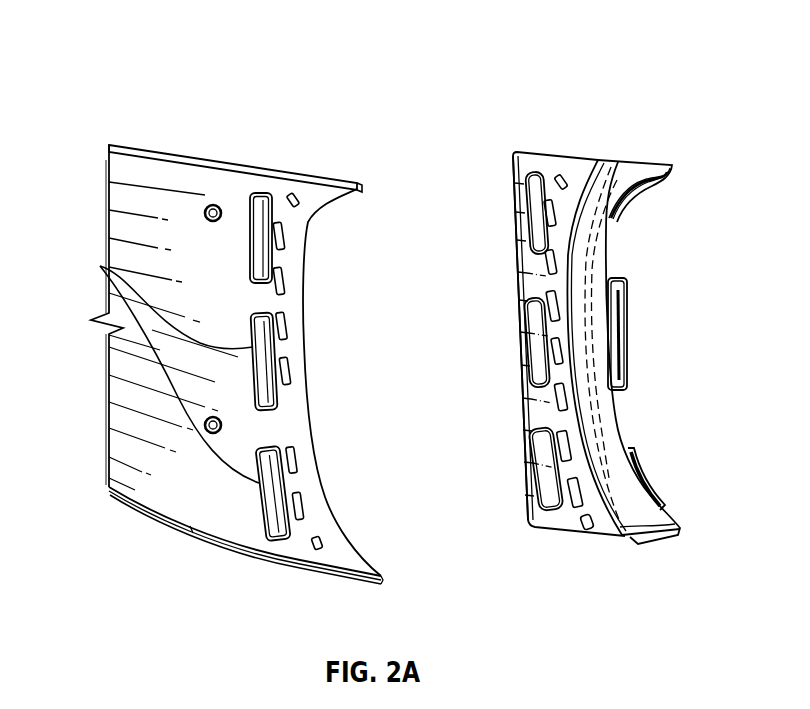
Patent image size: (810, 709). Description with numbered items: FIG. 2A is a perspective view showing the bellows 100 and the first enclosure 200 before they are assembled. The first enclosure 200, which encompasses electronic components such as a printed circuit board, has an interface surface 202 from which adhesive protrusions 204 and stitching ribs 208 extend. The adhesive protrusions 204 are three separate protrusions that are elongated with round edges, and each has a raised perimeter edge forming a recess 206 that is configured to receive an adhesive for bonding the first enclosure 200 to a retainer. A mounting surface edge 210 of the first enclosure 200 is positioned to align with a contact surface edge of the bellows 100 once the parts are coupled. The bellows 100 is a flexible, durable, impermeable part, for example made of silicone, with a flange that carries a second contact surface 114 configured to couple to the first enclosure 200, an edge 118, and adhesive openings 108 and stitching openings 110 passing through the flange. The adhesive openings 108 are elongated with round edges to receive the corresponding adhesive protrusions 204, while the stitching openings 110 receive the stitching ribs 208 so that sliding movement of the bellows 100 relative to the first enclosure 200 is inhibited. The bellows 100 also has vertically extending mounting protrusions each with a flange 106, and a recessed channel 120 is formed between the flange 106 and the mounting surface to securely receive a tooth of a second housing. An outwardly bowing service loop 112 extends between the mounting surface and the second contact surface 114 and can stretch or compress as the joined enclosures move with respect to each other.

The first enclosure 200 is at (115, 53).
The interface surface 202 is at (146, 168).
The adhesive protrusions 204 is at (262, 195).
The recess 206 is at (269, 212).
The stitching ribs 208 is at (289, 324).
The mounting surface edge 210 is at (308, 364).
The bellows 100 is at (512, 64).
The flange 106 is at (638, 473).
The adhesive openings 108 is at (553, 486).
The stitching openings 110 is at (582, 497).
The service loop 112 is at (627, 514).
The second contact surface 114 is at (547, 164).
The edge of the flange 118 is at (520, 429).
The recessed channel 120 is at (633, 196).